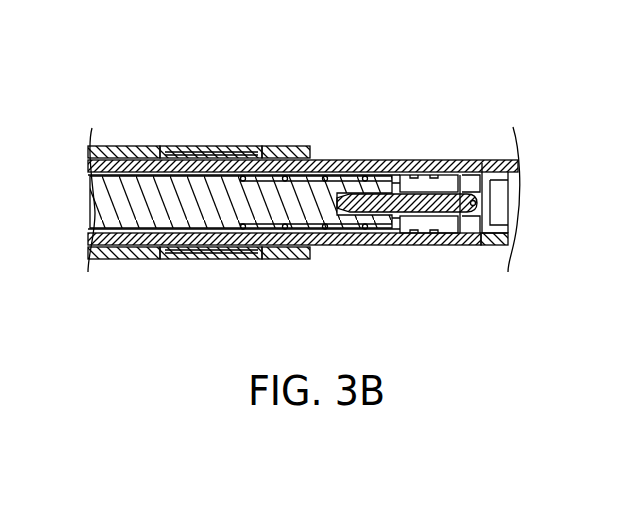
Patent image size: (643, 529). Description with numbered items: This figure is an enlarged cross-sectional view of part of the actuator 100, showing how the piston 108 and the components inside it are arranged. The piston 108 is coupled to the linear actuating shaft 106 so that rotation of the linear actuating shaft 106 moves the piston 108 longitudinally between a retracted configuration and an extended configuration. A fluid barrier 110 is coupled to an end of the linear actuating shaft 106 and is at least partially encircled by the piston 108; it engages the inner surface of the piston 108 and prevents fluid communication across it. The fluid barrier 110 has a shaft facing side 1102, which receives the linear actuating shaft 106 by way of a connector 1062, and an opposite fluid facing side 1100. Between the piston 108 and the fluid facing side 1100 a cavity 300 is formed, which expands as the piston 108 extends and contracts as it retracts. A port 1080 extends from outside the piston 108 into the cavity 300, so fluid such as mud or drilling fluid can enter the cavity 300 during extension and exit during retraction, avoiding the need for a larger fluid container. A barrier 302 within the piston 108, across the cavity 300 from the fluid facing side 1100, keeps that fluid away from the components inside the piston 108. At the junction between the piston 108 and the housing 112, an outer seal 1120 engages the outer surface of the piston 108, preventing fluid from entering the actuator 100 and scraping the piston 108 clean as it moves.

The actuator 100 is at (503, 38).
The linear actuating shaft 106 is at (197, 146).
The piston 108 is at (367, 160).
The fluid barrier 110 is at (407, 228).
The housing 112 is at (120, 146).
The cavity 300 is at (496, 162).
The barrier 302 is at (491, 236).
The connector 1062 is at (396, 162).
The port 1080 is at (473, 160).
The fluid facing side 1100 is at (497, 210).
The shaft facing side 1102 is at (370, 233).
The outer seal 1120 is at (285, 148).